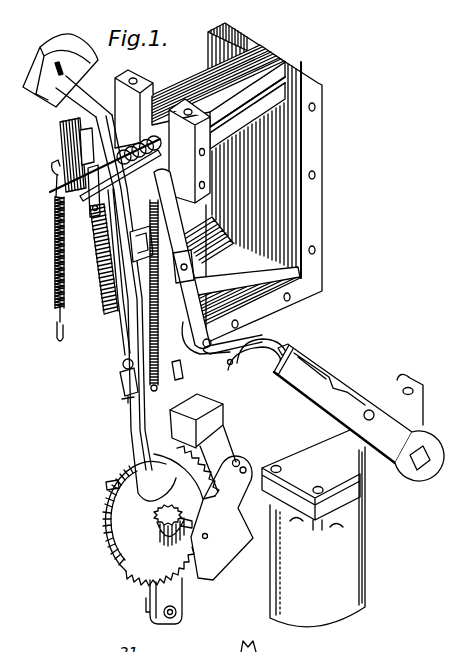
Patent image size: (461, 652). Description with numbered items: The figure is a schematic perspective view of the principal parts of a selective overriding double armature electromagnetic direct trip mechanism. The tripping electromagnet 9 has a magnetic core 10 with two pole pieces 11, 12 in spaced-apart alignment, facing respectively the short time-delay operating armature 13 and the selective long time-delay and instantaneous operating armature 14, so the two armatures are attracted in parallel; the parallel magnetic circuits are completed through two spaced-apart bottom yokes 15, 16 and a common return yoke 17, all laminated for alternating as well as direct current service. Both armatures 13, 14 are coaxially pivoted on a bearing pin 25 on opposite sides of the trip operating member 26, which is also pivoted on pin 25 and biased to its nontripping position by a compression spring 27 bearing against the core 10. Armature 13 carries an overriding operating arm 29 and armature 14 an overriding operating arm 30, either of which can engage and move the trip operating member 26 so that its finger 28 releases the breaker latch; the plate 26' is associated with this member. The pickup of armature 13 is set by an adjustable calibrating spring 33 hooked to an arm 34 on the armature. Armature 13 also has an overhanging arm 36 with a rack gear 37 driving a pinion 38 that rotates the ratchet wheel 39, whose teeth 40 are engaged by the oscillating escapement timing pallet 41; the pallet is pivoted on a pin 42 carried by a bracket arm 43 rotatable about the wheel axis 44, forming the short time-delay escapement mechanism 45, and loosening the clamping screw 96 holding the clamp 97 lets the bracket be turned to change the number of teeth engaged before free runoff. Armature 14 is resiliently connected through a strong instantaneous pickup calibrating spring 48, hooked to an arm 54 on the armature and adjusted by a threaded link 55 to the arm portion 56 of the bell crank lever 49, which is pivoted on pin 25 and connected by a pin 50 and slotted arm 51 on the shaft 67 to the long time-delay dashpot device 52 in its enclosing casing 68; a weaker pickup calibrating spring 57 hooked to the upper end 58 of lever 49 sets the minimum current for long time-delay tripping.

The tripping electromagnet 9 is at (358, 103).
The core 10 is at (195, 84).
The pole piece 11 is at (135, 80).
The pole piece 12 is at (180, 108).
The short time-delay operating armature 13 is at (60, 128).
The selective long time-delay and instantaneous operating armature 14 is at (170, 217).
The bottom yoke 15 is at (205, 262).
The bottom yoke 16 is at (271, 303).
The common return yoke 17 is at (323, 198).
The bearing pin 25 is at (216, 343).
The trip operating member 26 is at (84, 90).
The plate 26' is at (60, 62).
The compression spring 27 is at (126, 150).
The finger 28 is at (38, 62).
The overriding operating arm 29 is at (84, 182).
The overriding operating arm 30 is at (92, 266).
The adjustable calibrating spring 33 is at (55, 250).
The arm 34 is at (55, 161).
The overhanging arm 36 is at (132, 432).
The rack gear 37 is at (186, 453).
The pinion 38 is at (162, 532).
The ratchet wheel 39 is at (110, 510).
The teeth 40 is at (132, 576).
The escapement timing pallet 41 is at (220, 412).
The pin 42 is at (237, 460).
The bracket arm 43 is at (224, 516).
The axis 44 is at (207, 539).
The short time-delay escapement mechanism 45 is at (83, 556).
The instantaneous pickup calibrating spring 48 is at (102, 290).
The bell crank lever 49 is at (240, 367).
The pin 50 is at (278, 361).
The slotted arm 51 is at (336, 408).
The long time-delay dashpot device 52 is at (368, 557).
The arm 54 is at (95, 190).
The threaded link 55 is at (123, 364).
The arm portion 56 is at (176, 370).
The pickup calibrating spring 57 is at (151, 334).
The upper end 58 is at (140, 179).
The shaft 67 is at (428, 463).
The enclosing casing 68 is at (342, 506).
The clamping screw 96 is at (177, 614).
The clamp 97 is at (150, 610).